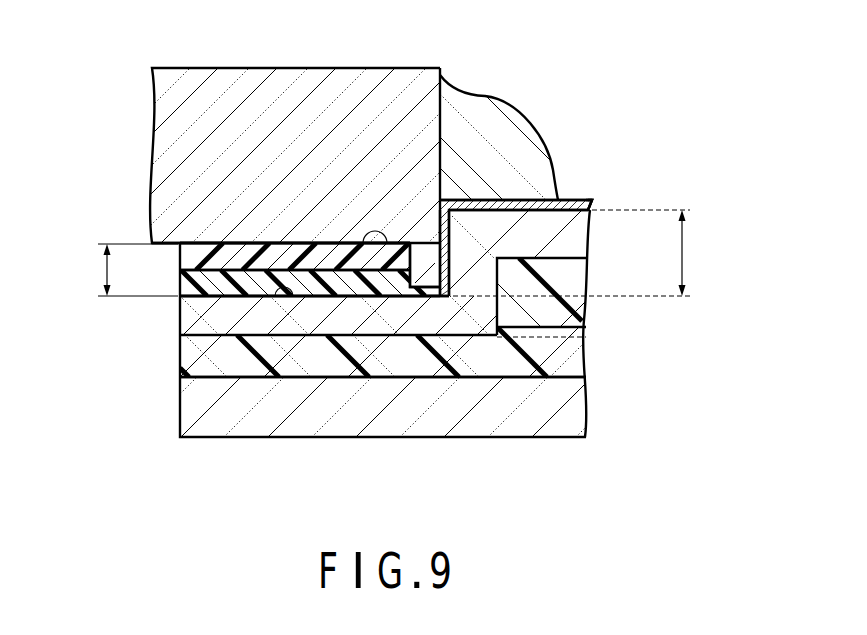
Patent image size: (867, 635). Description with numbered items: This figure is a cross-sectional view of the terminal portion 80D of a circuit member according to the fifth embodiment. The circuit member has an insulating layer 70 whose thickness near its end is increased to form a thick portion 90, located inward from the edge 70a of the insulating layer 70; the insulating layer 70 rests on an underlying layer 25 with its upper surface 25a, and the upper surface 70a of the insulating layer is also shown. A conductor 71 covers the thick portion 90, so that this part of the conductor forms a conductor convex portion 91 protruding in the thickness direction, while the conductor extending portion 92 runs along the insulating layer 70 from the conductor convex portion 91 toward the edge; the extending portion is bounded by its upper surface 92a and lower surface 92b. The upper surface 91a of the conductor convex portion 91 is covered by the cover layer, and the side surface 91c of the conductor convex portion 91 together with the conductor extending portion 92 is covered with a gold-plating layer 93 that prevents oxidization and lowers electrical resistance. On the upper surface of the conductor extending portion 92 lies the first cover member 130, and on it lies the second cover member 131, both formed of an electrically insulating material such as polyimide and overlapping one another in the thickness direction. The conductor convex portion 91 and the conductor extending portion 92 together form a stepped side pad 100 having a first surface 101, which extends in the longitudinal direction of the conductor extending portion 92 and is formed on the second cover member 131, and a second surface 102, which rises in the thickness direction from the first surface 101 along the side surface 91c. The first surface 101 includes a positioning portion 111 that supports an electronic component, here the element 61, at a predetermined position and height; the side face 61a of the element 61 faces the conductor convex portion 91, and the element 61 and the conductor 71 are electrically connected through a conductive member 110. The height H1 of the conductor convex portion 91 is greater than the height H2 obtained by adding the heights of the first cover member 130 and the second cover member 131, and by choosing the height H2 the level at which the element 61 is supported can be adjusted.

The substrate 25 is at (573, 412).
The upper surface of substrate 25a is at (178, 403).
The element 61 is at (172, 136).
The side surface of protective substrate 61a is at (459, 94).
The insulating layer 70 is at (573, 354).
The edge of the insulating layer 70a is at (178, 357).
The conductor 71 is at (568, 238).
The terminal portion 80D is at (615, 198).
The thick portion 90 is at (570, 276).
The conductor convex portion 91 is at (550, 202).
The upper surface of the conductor convex portion 91a is at (466, 200).
The side surface of the conductor convex portion 91c is at (438, 240).
The conductor extending portion 92 is at (350, 325).
The upper surface of insulating layer 92a is at (178, 321).
The protrusion on insulating layer 92b is at (267, 298).
The gold-plating layer 93 is at (583, 198).
The stepped side pad 100 is at (378, 250).
The first surface 101 is at (300, 250).
The second surface 102 is at (428, 255).
The conductive member 110 is at (508, 130).
The positioning portion 111 is at (392, 298).
The first cover member 130 is at (257, 273).
The second cover member 131 is at (282, 243).
The height of the conductor convex portion H1 is at (684, 258).
The height of the cover members H2 is at (103, 270).